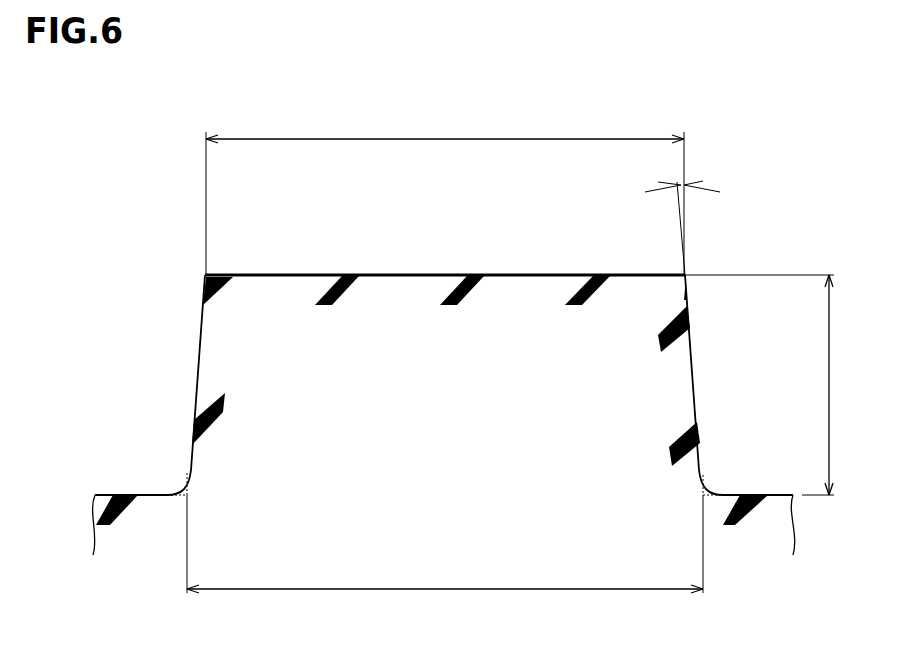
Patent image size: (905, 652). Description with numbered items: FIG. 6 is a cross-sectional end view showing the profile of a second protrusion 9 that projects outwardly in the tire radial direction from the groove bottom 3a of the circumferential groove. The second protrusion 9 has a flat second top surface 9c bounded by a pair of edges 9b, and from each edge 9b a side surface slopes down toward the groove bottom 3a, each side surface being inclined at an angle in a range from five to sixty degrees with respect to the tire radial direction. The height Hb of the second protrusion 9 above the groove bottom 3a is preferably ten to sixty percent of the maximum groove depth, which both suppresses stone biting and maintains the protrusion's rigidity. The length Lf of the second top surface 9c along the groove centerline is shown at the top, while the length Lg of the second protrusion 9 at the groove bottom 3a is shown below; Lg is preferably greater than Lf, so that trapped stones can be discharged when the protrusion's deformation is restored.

The second protrusion 9 is at (278, 362).
The edge of second top surface 9b is at (197, 272).
The second top surface 9c is at (407, 275).
The groove bottom 3a is at (112, 493).
The length of second top surface Lf is at (445, 190).
The length of second protrusion at groove bottom Lg is at (445, 560).
The height of second protrusion Hb is at (779, 385).